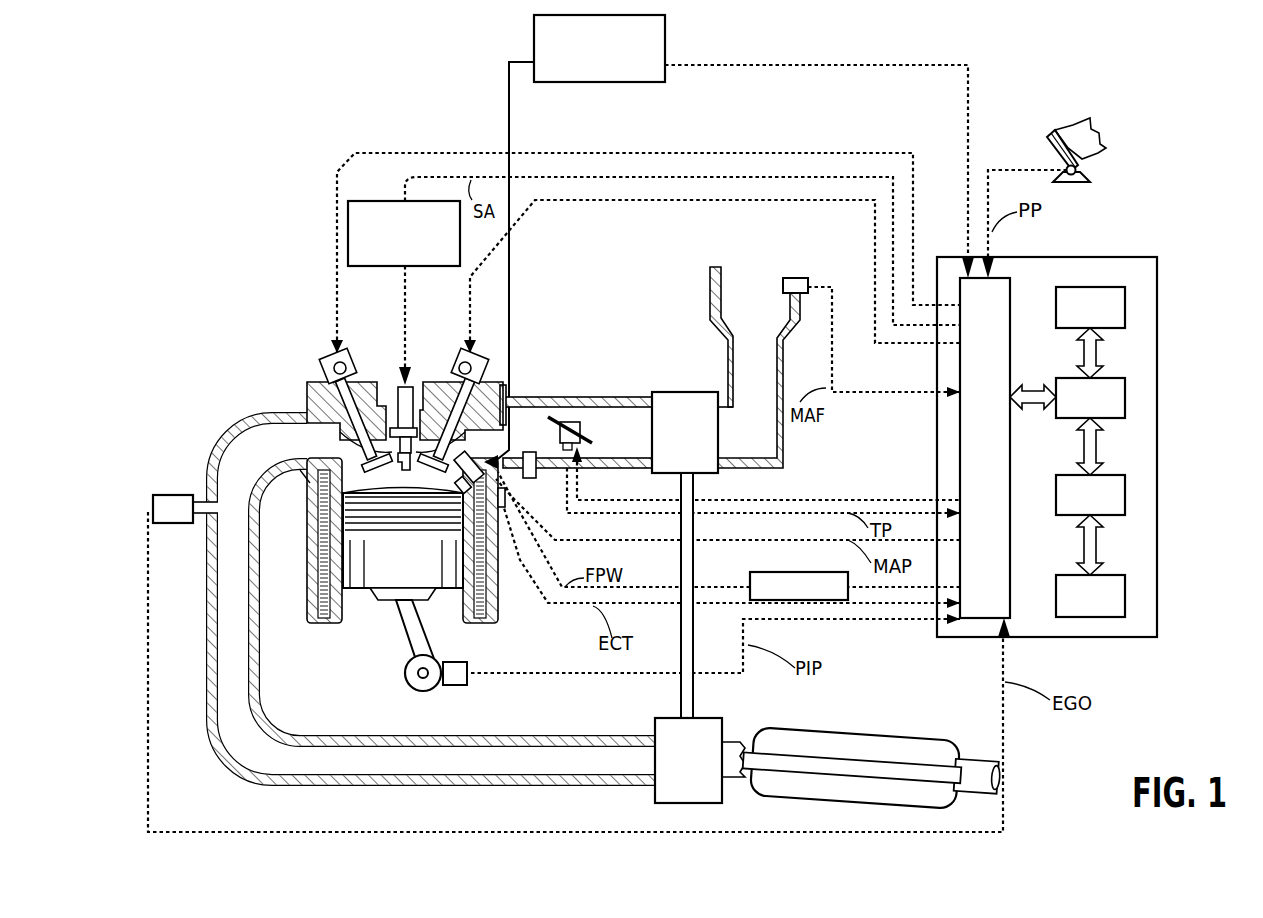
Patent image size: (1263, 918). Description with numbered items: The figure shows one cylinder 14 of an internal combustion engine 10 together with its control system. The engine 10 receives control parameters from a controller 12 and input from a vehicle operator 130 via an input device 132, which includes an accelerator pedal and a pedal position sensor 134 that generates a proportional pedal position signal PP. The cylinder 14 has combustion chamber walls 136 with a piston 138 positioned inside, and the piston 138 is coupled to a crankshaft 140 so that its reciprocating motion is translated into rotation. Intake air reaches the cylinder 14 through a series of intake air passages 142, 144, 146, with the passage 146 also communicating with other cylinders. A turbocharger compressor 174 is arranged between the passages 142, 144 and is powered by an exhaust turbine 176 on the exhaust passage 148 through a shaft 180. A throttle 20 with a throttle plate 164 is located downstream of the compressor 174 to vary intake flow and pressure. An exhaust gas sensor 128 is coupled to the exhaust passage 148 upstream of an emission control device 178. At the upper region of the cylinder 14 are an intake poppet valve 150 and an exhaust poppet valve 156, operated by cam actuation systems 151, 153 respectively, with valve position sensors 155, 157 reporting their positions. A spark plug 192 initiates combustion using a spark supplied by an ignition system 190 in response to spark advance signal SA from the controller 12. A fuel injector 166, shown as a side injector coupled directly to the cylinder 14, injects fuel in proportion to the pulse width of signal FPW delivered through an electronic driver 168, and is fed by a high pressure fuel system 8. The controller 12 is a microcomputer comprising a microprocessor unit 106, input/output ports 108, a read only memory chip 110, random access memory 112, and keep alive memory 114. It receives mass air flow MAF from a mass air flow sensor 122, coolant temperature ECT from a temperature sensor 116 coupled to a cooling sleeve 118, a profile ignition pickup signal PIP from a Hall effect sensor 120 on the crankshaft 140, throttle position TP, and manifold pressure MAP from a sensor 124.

The high pressure fuel system 8 is at (665, 65).
The internal combustion engine 10 is at (138, 90).
The controller 12 is at (1157, 257).
The cylinder 14 is at (310, 503).
The throttle 20 is at (571, 422).
The microprocessor unit 106 is at (1125, 392).
The input/output ports 108 is at (1012, 286).
The read only memory chip 110 is at (1125, 302).
The random access memory 112 is at (1125, 497).
The keep alive memory 114 is at (1125, 599).
The temperature sensor 116 is at (505, 508).
The cooling sleeve 118 is at (500, 480).
The Hall effect sensor 120 is at (460, 688).
The mass air flow sensor 122 is at (830, 268).
The manifold pressure sensor 124 is at (531, 480).
The exhaust gas sensor 128 is at (153, 500).
The vehicle operator 130 is at (1100, 133).
The input device 132 is at (1056, 143).
The pedal position sensor 134 is at (1085, 172).
The combustion chamber walls 136 is at (343, 612).
The piston 138 is at (390, 575).
The crankshaft 140 is at (418, 690).
The intake air passage 142 is at (770, 313).
The intake air passage 144 is at (641, 445).
The intake air passage 146 is at (541, 445).
The exhaust passage 148 is at (294, 453).
The intake poppet valve 150 is at (418, 415).
The cam actuation system 151 is at (462, 354).
The cam actuation system 153 is at (348, 352).
The valve position sensor 155 is at (488, 375).
The exhaust poppet valve 156 is at (366, 457).
The valve position sensor 157 is at (324, 364).
The throttle plate 164 is at (549, 417).
The fuel injector 166 is at (472, 465).
The electronic driver 168 is at (751, 572).
The compressor 174 is at (672, 392).
The exhaust turbine 176 is at (655, 790).
The emission control device 178 is at (918, 736).
The shaft 180 is at (688, 683).
The ignition system 190 is at (363, 200).
The spark plug 192 is at (397, 432).